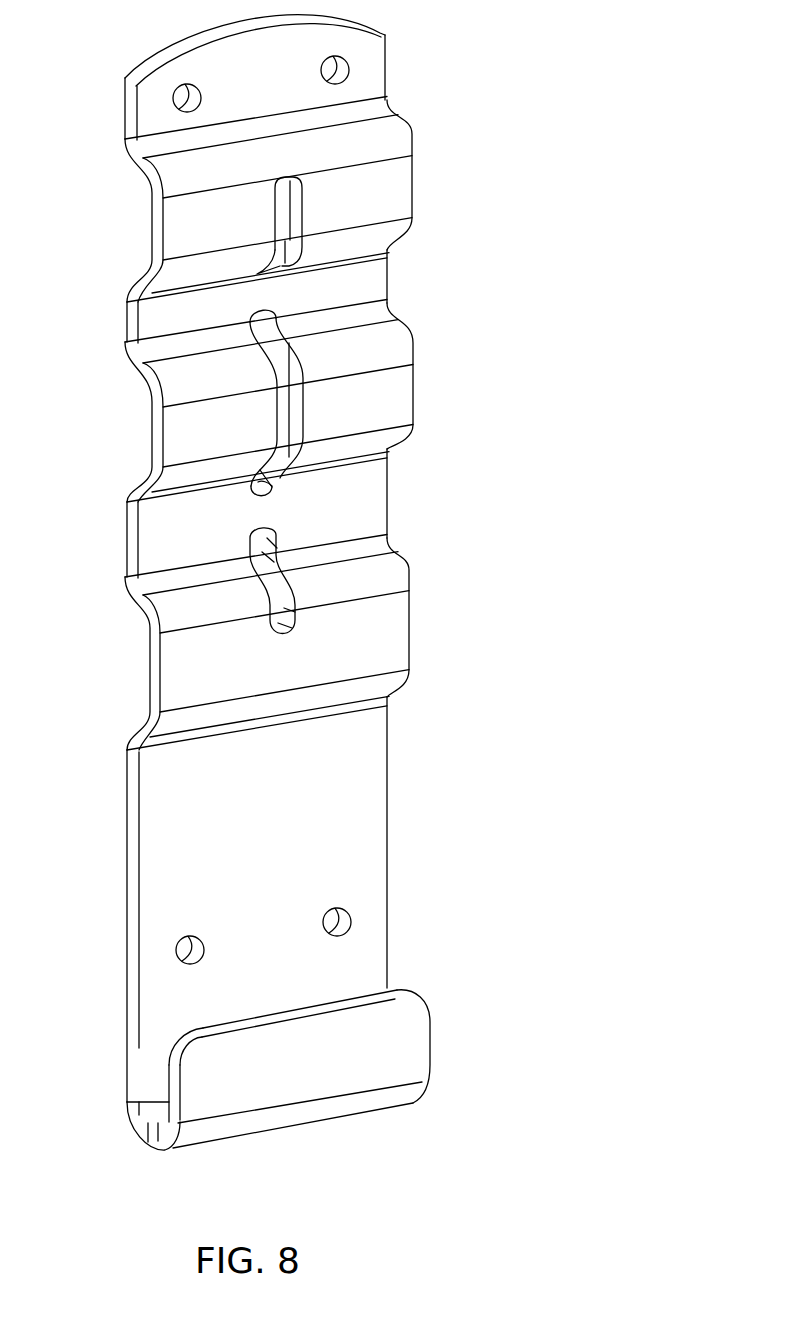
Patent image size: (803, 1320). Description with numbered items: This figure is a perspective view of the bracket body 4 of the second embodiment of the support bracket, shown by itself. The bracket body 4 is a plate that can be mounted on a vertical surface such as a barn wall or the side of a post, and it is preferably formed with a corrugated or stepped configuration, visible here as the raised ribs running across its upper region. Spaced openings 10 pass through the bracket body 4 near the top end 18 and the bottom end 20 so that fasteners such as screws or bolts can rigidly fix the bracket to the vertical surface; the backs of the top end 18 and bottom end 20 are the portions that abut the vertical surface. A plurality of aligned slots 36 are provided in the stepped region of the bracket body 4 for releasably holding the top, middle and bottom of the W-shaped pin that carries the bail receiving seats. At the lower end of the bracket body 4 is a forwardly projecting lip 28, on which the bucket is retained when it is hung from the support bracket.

The bracket body 4 is at (277, 582).
The top end 18 is at (152, 103).
The slots 36 is at (303, 210).
The bottom end 20 is at (248, 899).
The openings 10 is at (351, 918).
The lip 28 is at (393, 1040).